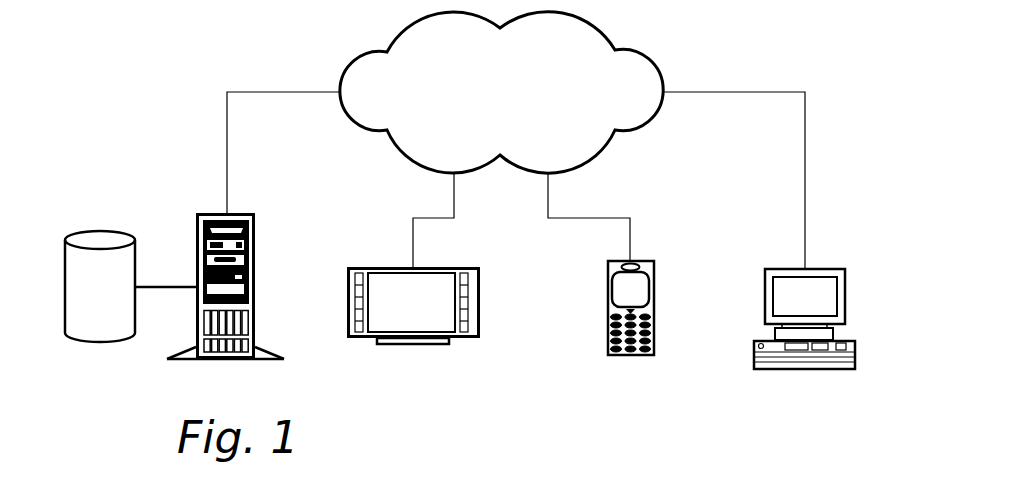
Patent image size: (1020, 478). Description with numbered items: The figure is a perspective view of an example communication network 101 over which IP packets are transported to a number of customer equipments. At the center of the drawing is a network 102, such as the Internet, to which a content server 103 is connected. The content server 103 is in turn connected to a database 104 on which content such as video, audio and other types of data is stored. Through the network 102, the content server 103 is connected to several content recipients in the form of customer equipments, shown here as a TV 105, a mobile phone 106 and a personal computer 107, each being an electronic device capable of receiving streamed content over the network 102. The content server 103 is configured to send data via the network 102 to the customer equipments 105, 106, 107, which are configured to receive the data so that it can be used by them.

The communication network 101 is at (723, 54).
The network 102 is at (521, 102).
The content server 103 is at (195, 257).
The database 104 is at (92, 240).
The TV 105 is at (398, 267).
The mobile phone 106 is at (655, 308).
The personal computer 107 is at (827, 267).